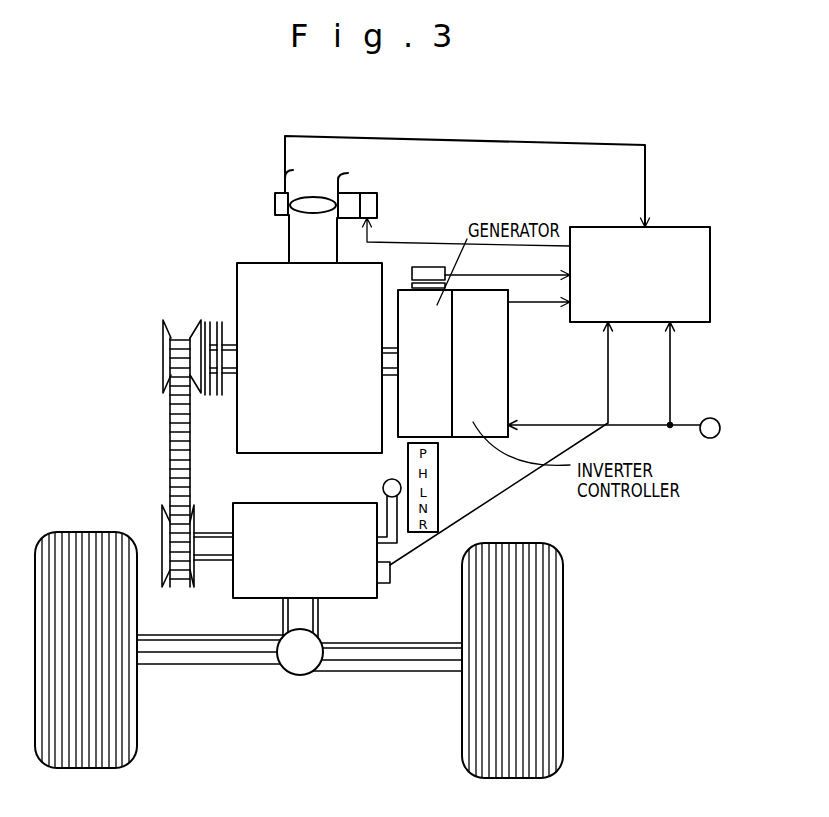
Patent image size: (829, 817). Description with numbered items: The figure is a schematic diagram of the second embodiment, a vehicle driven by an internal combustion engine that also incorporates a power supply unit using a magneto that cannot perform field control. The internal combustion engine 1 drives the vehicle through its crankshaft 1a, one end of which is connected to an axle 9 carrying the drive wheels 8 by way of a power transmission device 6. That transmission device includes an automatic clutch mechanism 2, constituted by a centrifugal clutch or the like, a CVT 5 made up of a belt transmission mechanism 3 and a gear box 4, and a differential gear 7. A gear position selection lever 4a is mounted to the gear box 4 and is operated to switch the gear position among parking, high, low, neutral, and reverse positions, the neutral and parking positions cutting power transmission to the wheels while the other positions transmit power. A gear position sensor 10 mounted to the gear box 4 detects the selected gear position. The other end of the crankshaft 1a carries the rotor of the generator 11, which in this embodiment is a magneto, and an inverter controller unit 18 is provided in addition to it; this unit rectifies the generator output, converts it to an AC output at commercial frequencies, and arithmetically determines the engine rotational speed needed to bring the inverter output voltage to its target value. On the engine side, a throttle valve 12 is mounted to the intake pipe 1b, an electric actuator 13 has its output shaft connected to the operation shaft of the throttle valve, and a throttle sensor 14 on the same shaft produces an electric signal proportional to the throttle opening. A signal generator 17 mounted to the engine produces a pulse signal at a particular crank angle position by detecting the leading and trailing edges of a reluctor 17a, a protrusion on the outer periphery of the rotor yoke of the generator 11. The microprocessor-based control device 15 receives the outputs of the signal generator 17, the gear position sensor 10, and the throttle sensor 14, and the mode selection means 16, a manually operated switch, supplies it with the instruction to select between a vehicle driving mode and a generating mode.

The internal combustion engine 1 is at (231, 252).
The crankshaft 1a is at (228, 377).
The intake pipe 1b is at (286, 237).
The automatic clutch mechanism 2 is at (215, 306).
The belt transmission mechanism 3 is at (161, 415).
The gear box 4 is at (297, 502).
The gear position selection lever 4a is at (384, 481).
The CVT 5 is at (159, 478).
The power transmission device 6 is at (211, 592).
The differential gear 7 is at (300, 667).
The drive wheels 8 is at (103, 534).
The axle 9 is at (202, 668).
The gear position sensor 10 is at (392, 580).
The generator 11 is at (435, 428).
The throttle valve 12 is at (313, 205).
The electric actuator 13 is at (353, 193).
The throttle sensor 14 is at (277, 193).
The control device 15 is at (619, 217).
The mode selection means 16 is at (717, 437).
The signal generator 17 is at (432, 268).
The reluctor 17a is at (410, 283).
The inverter controller unit 18 is at (508, 368).